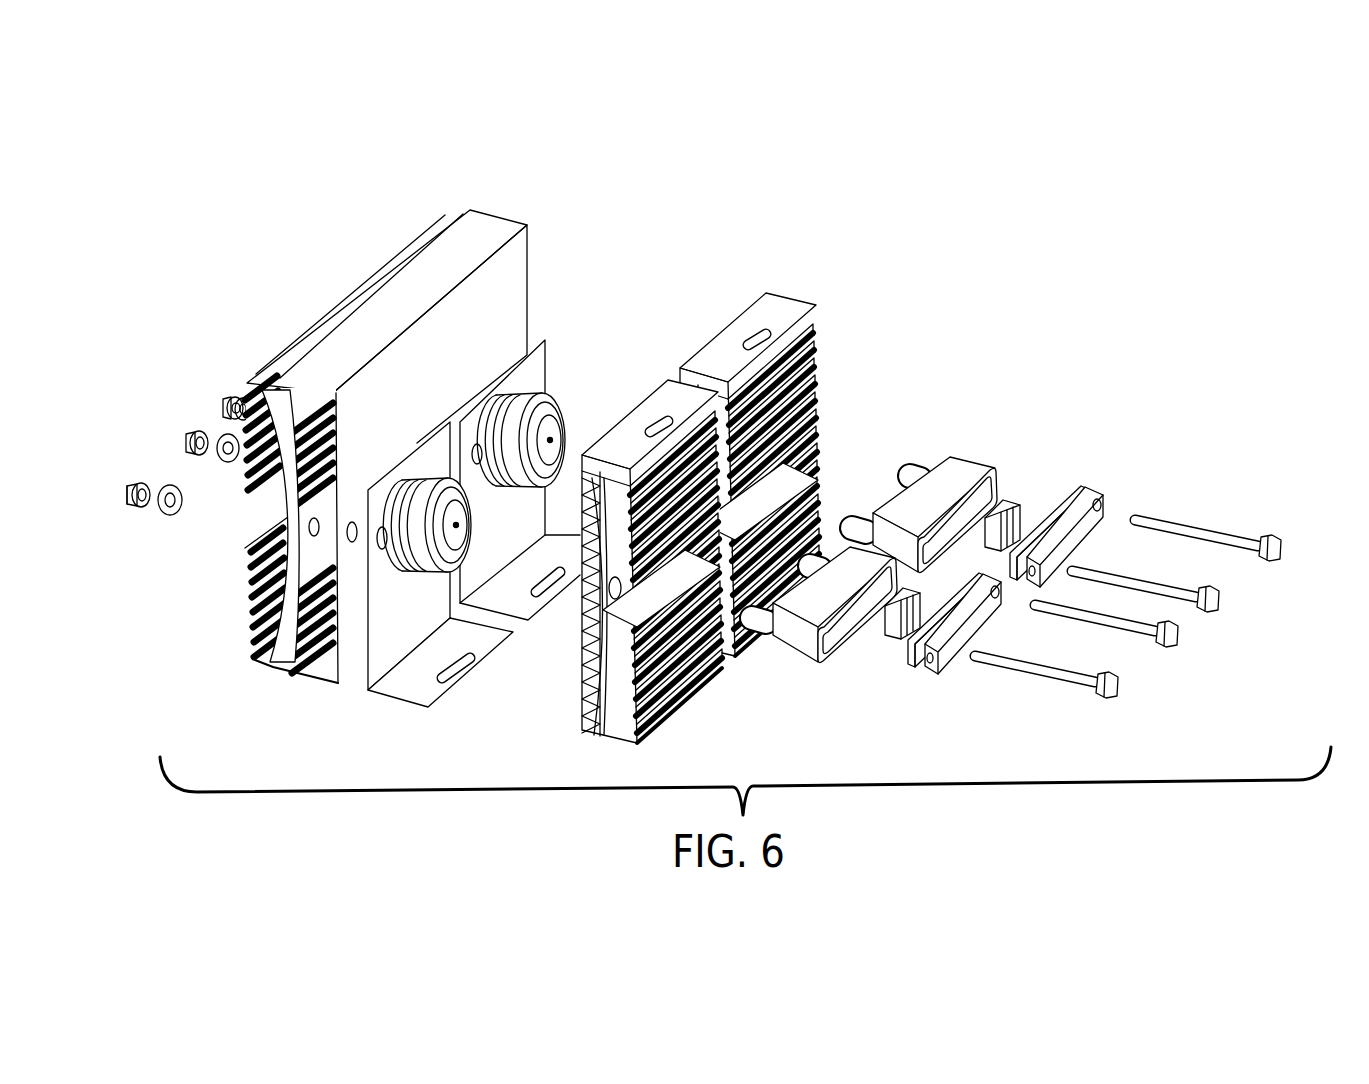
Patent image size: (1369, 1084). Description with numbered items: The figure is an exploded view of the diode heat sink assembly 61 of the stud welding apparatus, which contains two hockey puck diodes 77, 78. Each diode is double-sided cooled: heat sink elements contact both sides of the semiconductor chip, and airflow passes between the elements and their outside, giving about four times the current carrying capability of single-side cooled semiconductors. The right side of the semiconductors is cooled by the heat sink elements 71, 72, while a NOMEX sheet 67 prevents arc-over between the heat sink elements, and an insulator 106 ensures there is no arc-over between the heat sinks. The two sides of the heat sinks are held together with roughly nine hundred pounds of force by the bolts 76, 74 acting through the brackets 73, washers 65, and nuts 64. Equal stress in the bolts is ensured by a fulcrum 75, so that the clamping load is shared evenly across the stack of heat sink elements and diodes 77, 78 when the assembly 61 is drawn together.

The heat sink assembly 61 is at (936, 191).
The nuts 64 is at (143, 480).
The washers 65 is at (170, 518).
The NOMEX sheet 67 is at (323, 672).
The heat sink element 71 is at (670, 715).
The heat sink element 72 is at (806, 312).
The brackets 73 is at (973, 628).
The bolts 74 is at (995, 668).
The fulcrum 75 is at (1010, 502).
The bolts 76 is at (1274, 537).
The hockey puck diode 77 is at (440, 566).
The hockey puck diode 78 is at (553, 398).
The insulator 106 is at (967, 467).